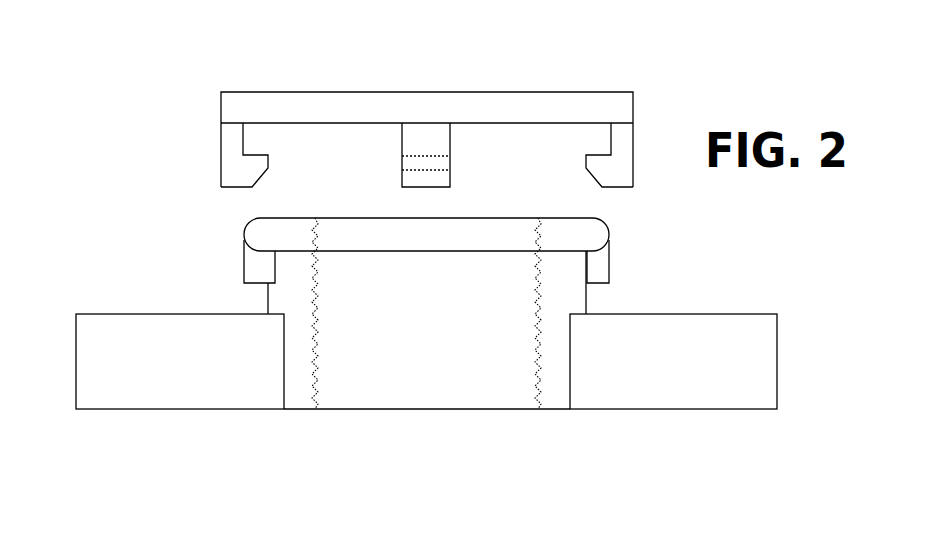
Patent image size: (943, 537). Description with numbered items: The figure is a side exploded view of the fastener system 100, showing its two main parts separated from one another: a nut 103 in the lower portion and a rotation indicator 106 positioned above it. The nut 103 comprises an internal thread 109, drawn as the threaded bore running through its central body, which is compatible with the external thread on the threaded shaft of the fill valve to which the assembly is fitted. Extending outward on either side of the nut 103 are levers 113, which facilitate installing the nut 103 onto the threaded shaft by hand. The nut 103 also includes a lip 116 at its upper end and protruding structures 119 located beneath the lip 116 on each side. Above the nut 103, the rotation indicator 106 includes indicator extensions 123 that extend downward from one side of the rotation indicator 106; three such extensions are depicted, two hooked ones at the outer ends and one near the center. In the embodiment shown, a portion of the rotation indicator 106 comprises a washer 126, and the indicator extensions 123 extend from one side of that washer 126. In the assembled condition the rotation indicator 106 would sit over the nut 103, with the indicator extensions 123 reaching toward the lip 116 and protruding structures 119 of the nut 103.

The fastener system 100 is at (138, 75).
The nut 103 is at (499, 434).
The rotation indicator 106 is at (579, 77).
The internal thread 109 is at (318, 339).
The levers 113 is at (172, 388).
The lip 116 is at (588, 232).
The protruding structures 119 is at (255, 263).
The indicator extensions 123 is at (233, 168).
The washer 126 is at (615, 110).